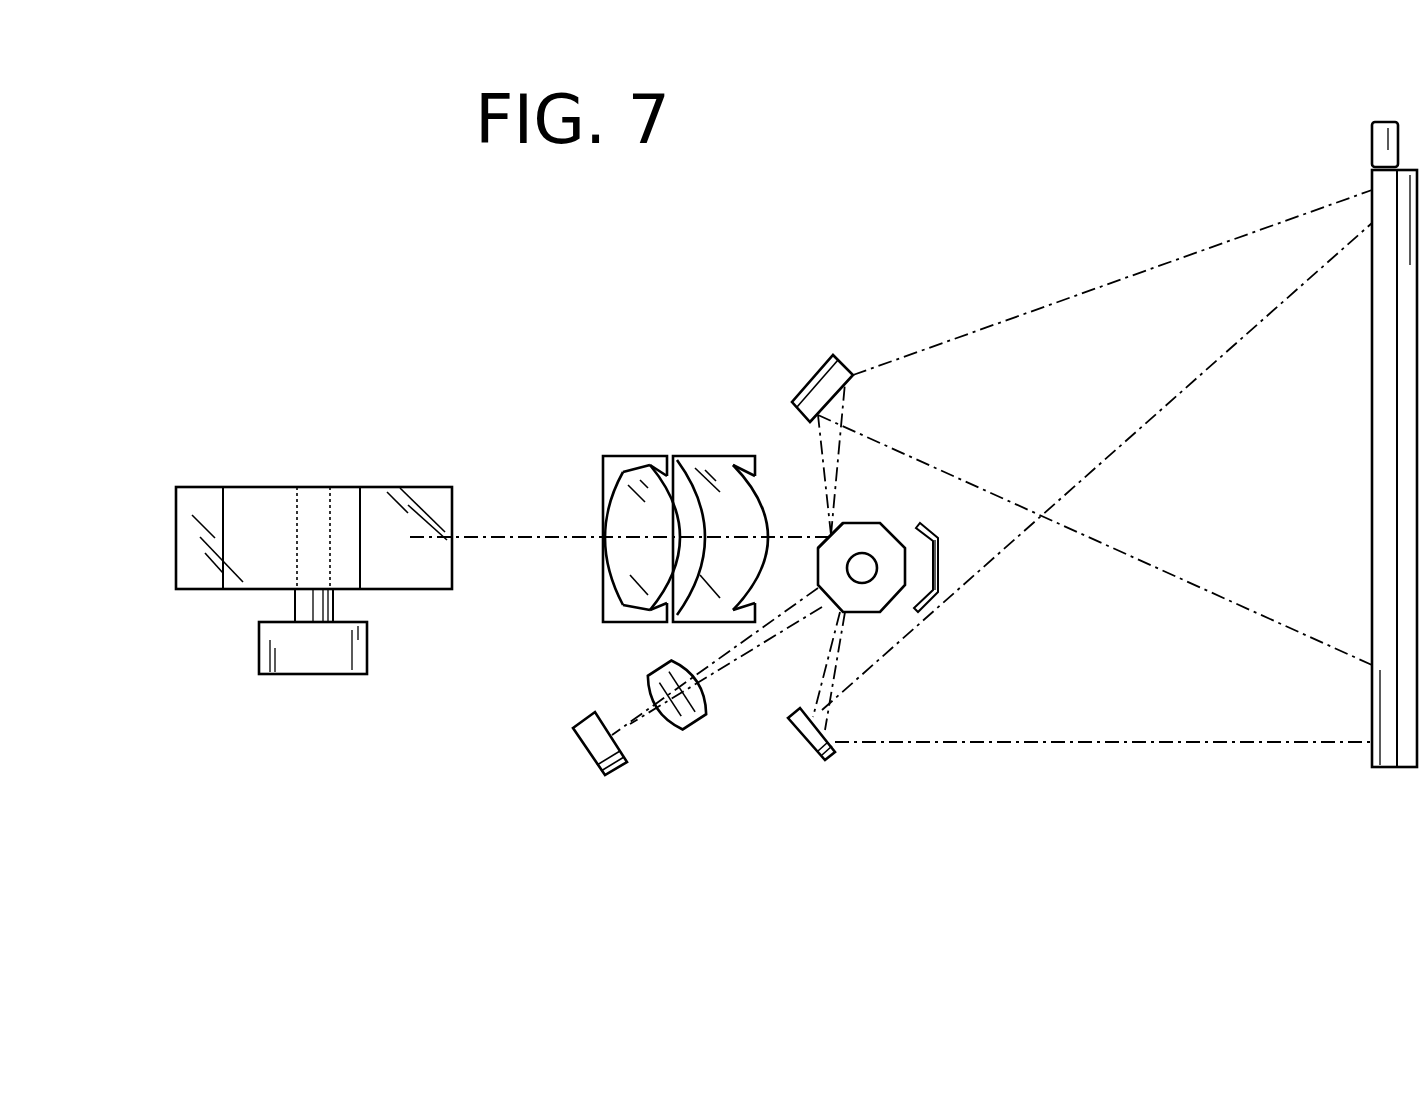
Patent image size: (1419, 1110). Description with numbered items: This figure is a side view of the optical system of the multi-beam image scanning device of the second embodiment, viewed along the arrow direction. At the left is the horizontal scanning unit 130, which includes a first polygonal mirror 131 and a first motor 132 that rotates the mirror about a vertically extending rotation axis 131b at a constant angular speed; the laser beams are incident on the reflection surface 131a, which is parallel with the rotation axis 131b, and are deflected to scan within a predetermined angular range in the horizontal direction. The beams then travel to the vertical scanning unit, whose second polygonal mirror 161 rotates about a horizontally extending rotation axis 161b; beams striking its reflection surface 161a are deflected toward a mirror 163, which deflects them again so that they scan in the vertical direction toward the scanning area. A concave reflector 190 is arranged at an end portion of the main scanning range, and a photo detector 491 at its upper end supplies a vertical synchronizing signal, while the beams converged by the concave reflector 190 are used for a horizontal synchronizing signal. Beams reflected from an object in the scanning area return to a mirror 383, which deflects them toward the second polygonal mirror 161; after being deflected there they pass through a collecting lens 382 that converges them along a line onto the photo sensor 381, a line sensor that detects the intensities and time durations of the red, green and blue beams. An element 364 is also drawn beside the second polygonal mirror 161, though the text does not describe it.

The horizontal scanning unit 130 is at (168, 424).
The first polygonal mirror 131 is at (283, 489).
The reflection surface 131a is at (408, 520).
The rotation axis 131b is at (335, 598).
The first motor 132 is at (304, 655).
The mirror 163 is at (820, 365).
The second polygonal mirror 161 is at (880, 523).
The reflection surface 161a is at (828, 532).
The rotation axis 161b is at (868, 573).
The light modulating element 364 is at (940, 568).
The photo sensor 381 is at (597, 748).
The collecting lens 382 is at (680, 727).
The mirror 383 is at (815, 758).
The photo detector 491 is at (1378, 145).
The concave reflector 190 is at (1380, 769).